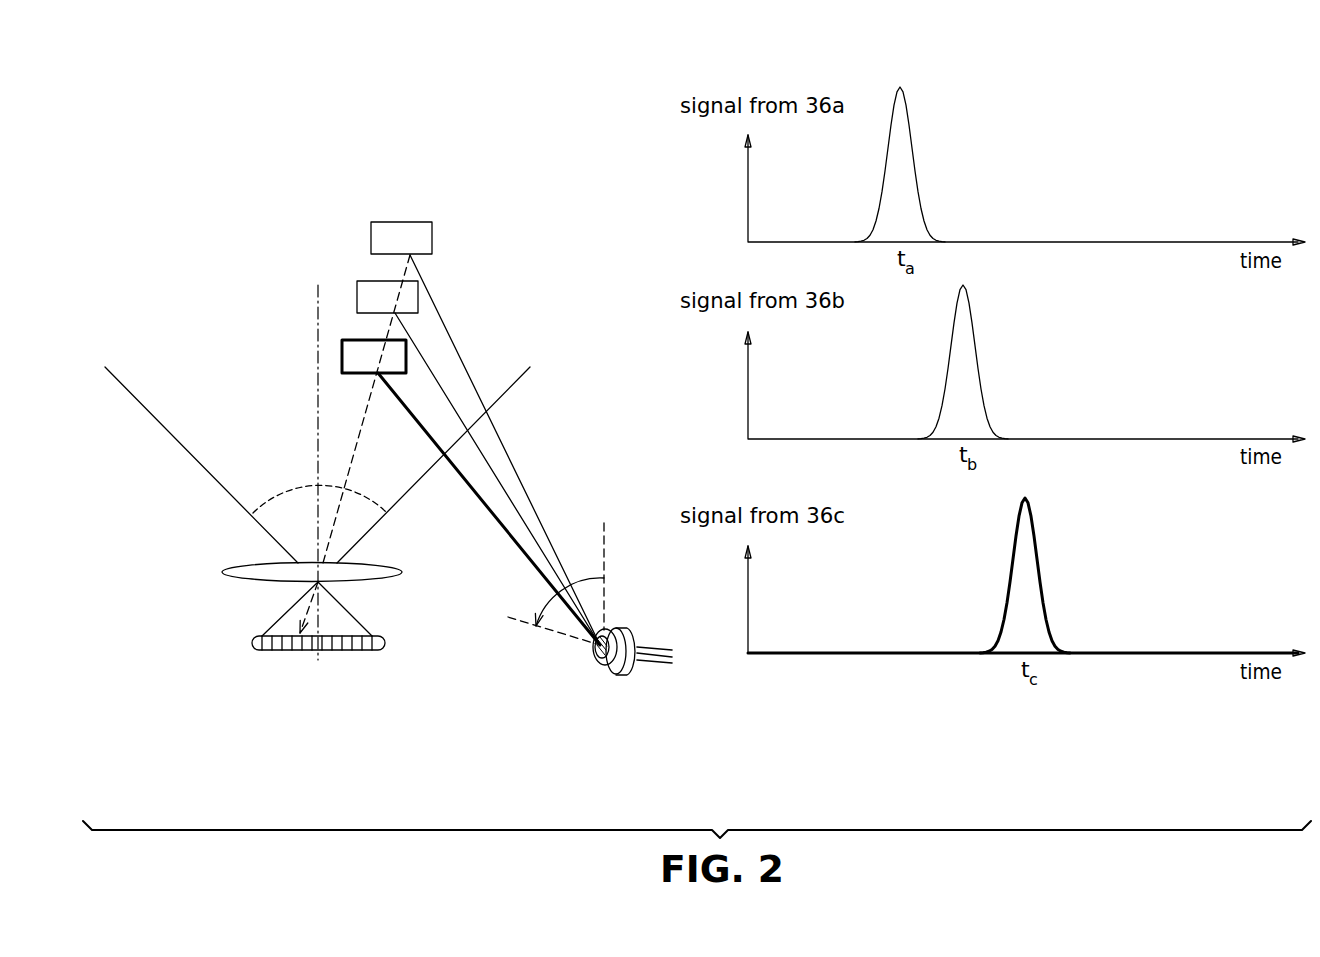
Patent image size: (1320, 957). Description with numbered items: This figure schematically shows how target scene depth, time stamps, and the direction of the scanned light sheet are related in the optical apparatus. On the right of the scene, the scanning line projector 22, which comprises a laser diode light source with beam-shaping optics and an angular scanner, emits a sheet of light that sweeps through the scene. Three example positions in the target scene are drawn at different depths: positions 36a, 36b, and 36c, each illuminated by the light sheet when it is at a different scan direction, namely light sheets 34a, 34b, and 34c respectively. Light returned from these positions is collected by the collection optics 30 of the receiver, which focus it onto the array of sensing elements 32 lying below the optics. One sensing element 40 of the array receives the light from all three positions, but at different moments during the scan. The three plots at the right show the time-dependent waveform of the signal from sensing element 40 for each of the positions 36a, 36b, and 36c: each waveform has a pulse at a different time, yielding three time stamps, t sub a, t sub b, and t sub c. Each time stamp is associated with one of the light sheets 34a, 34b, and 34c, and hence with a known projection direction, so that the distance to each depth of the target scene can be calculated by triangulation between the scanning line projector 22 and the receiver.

The scanning line projector 22 is at (625, 633).
The collection optics 30 is at (243, 572).
The array of sensing elements 32 is at (255, 642).
The sensing element 40 is at (330, 651).
The light sheet 34a is at (500, 437).
The light sheet 34b is at (493, 473).
The light sheet 34c is at (495, 515).
The target scene position 36a is at (371, 232).
The target scene position 36b is at (357, 290).
The target scene position 36c is at (342, 352).